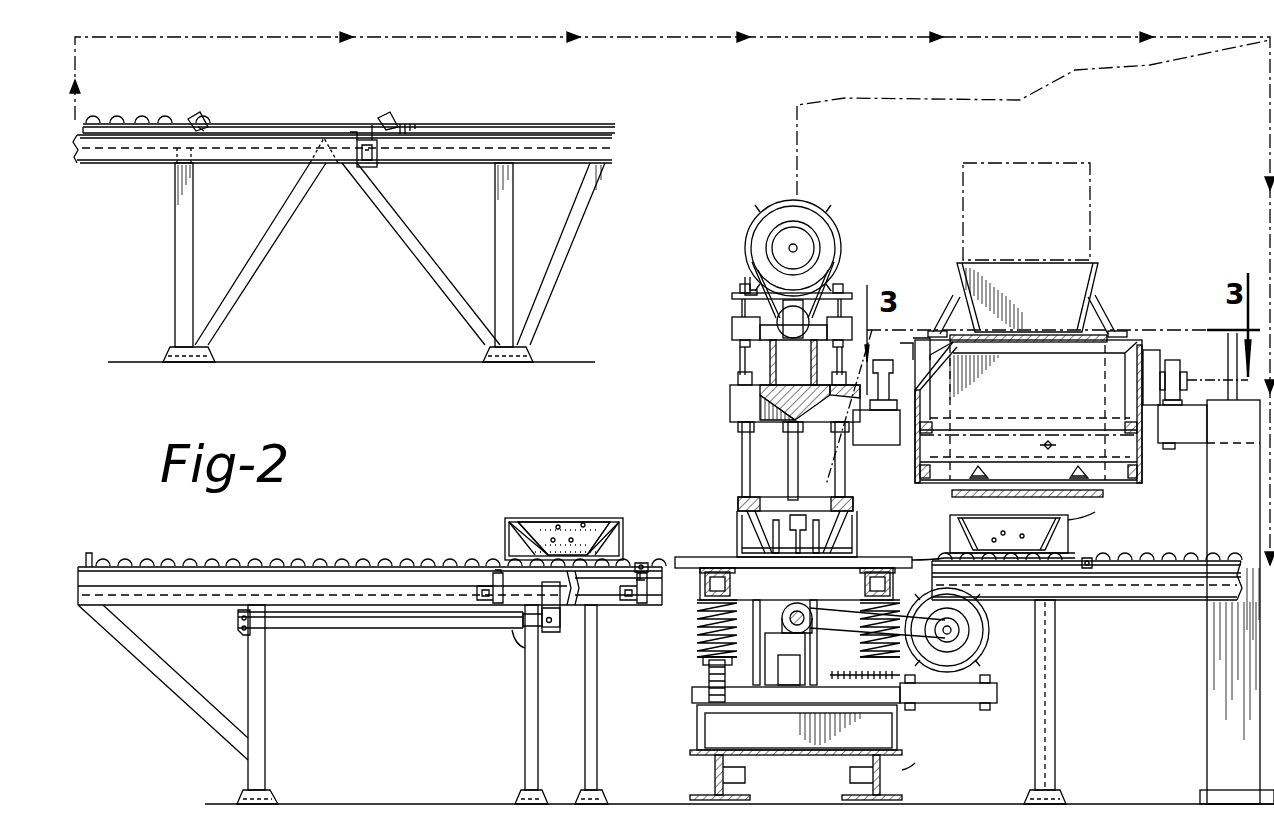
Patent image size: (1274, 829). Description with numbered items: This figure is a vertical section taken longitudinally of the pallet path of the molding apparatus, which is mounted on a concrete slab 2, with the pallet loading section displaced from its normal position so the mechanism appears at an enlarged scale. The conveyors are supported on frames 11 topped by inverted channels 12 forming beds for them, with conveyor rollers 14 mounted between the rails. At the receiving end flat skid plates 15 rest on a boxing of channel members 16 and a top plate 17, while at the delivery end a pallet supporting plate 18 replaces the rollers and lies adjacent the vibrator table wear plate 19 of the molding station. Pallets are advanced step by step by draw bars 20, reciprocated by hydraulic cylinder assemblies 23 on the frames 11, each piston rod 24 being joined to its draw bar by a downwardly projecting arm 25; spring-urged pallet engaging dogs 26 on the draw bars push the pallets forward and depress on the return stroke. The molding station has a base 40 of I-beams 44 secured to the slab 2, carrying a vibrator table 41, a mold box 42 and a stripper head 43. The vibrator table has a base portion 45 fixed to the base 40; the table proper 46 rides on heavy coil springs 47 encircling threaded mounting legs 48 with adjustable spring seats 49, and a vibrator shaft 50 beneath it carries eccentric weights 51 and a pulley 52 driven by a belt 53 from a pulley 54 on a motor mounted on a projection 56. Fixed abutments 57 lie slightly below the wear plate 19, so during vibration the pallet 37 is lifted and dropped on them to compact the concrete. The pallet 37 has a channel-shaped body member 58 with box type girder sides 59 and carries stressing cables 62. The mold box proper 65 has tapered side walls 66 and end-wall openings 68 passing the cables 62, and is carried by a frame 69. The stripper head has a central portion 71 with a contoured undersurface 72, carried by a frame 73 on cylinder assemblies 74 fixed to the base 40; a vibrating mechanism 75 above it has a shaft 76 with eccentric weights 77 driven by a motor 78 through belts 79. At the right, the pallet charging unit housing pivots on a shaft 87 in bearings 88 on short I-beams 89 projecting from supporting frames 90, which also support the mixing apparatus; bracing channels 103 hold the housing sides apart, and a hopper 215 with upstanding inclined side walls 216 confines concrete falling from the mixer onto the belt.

The concrete slab 2 is at (960, 797).
The frames 11 is at (265, 712).
The inverted channels 12 is at (640, 158).
The conveyor rollers 14 is at (172, 110).
The flat skid plates 15 is at (570, 120).
The channel members 16 is at (615, 133).
The top plate 17 is at (615, 122).
The pallet supporting plate 18 is at (918, 545).
The vibrator table wear plate 19 is at (870, 560).
The draw bars 20 is at (140, 135).
The hydraulic cylinder assemblies 23 is at (345, 628).
The piston rod 24 is at (525, 648).
The downwardly projecting arm 25 is at (560, 605).
The pallet engaging dogs 26 is at (200, 118).
The pallet 37 is at (830, 540).
The base 40 is at (680, 766).
The vibrator table 41 is at (717, 540).
The mold box 42 is at (733, 497).
The stripper head 43 is at (748, 408).
The I-beams 44 is at (918, 761).
The base portion 45 is at (679, 702).
The table proper 46 is at (700, 590).
The heavy coil springs 47 is at (697, 645).
The mounting legs 48 is at (708, 680).
The spring seats 49 is at (797, 727).
The vibrator shaft 50 is at (792, 603).
The eccentric weights 51 is at (790, 665).
The pulley 52 is at (772, 633).
The belt 53 is at (985, 650).
The pulley 54 is at (960, 628).
The projection 56 is at (990, 693).
The fixed abutment 57 is at (845, 618).
The channel-shaped body member 58 is at (1092, 509).
The box type girder sides 59 is at (950, 520).
The stressing cables 62 is at (1003, 533).
The mold box proper 65 is at (813, 475).
The tapered side walls 66 is at (738, 504).
The openings 68 is at (806, 525).
The frame 69 is at (830, 495).
The central portion 71 is at (748, 396).
The undersurface 72 is at (742, 440).
The frame 73 is at (770, 368).
The cylinder assemblies 74 is at (788, 455).
The vibrating mechanism 75 is at (723, 307).
The shaft 76 is at (765, 330).
The eccentric weights 77 is at (800, 322).
The motor 78 is at (818, 232).
The belts 79 is at (745, 285).
The shaft 87 is at (1195, 383).
The bearings 88 is at (1175, 360).
The short I-beams 89 is at (880, 445).
The supporting frames 90 is at (1207, 505).
The bracing channels 103 is at (1120, 487).
The hopper 215 is at (1042, 264).
The upstanding inclined side walls 216 is at (1088, 298).